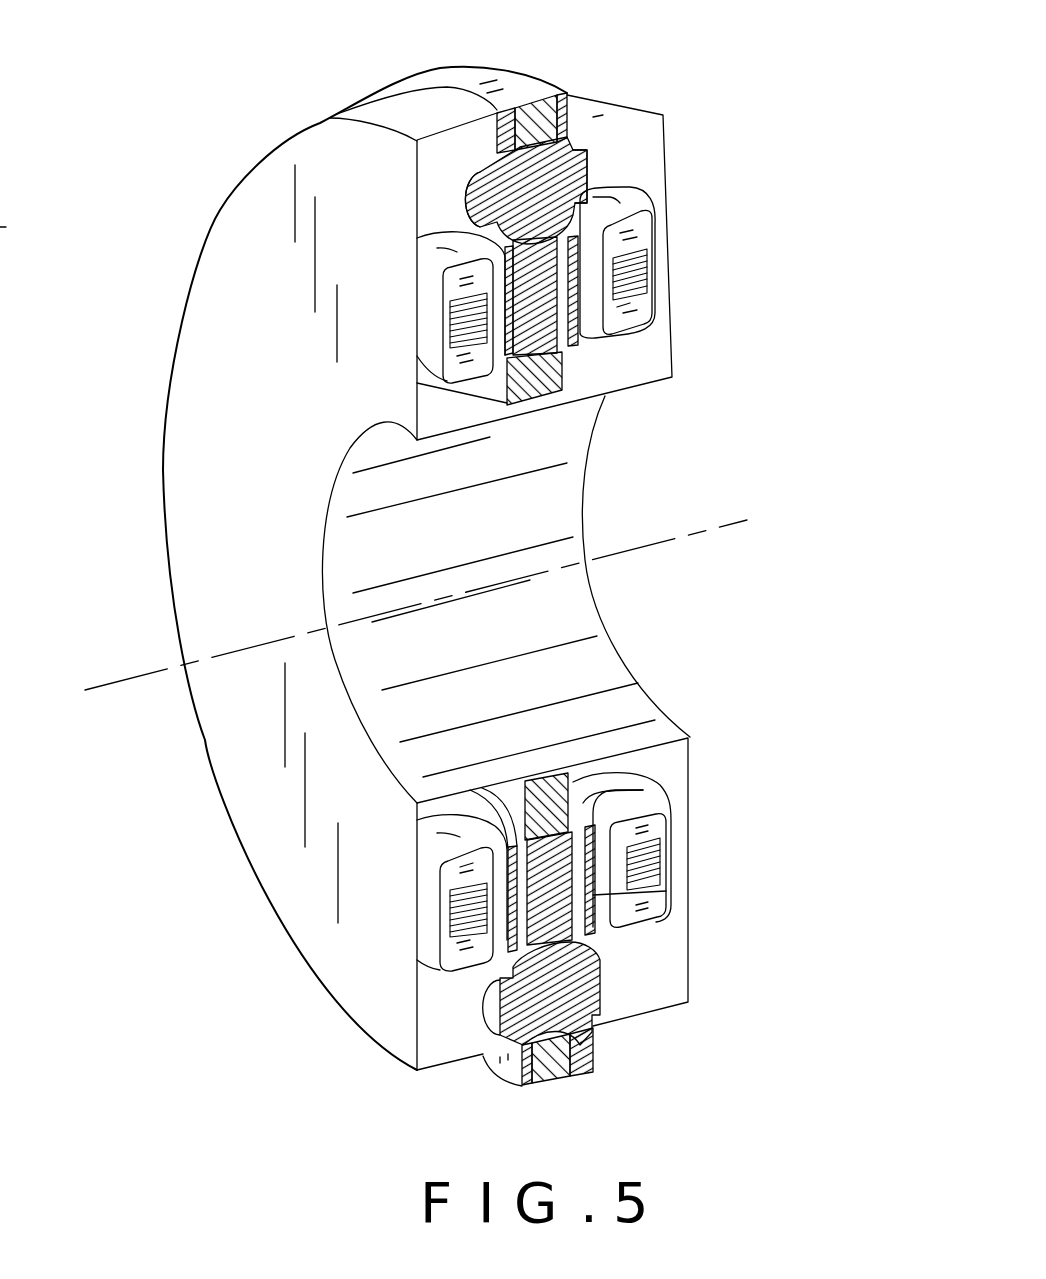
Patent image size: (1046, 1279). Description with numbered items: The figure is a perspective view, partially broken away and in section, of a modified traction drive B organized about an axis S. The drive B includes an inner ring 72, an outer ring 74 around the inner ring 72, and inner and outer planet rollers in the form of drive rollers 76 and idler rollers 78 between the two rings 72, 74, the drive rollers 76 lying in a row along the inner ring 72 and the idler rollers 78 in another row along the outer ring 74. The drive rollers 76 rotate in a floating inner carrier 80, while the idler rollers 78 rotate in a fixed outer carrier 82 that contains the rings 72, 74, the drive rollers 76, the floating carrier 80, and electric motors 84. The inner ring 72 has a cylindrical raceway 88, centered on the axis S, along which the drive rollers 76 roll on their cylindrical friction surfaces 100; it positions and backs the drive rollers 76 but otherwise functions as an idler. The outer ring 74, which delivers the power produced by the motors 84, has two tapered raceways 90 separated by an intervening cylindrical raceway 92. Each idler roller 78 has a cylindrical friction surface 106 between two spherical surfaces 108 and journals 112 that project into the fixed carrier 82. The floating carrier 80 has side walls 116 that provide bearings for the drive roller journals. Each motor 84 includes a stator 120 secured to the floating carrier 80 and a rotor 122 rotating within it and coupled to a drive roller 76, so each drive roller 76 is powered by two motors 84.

The inner ring 72 is at (602, 398).
The outer ring 74 is at (593, 1048).
The drive rollers 76 is at (597, 803).
The idler rollers 78 is at (587, 176).
The floating inner carrier 80 is at (575, 348).
The fixed outer carrier 82 is at (250, 308).
The electric motors 84 is at (652, 220).
The cylindrical raceway 88 is at (530, 370).
The tapered raceways 90 is at (600, 982).
The intervening cylindrical raceway 92 is at (567, 1045).
The cylindrical friction surface 100 is at (557, 830).
The cylindrical friction surface 106 is at (500, 156).
The spherical surfaces 108 is at (532, 108).
The journals 112 is at (590, 152).
The side walls 116 is at (640, 893).
The stator 120 is at (640, 308).
The rotor 122 is at (650, 263).
The modified traction drive B is at (200, 150).
The axis S is at (402, 614).